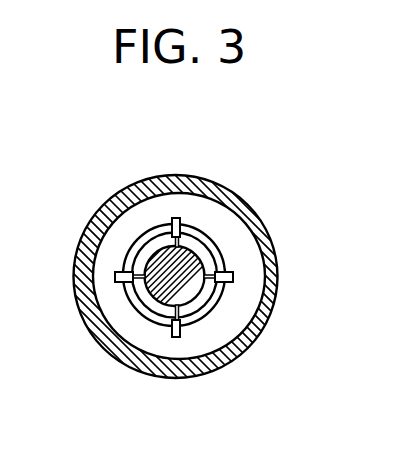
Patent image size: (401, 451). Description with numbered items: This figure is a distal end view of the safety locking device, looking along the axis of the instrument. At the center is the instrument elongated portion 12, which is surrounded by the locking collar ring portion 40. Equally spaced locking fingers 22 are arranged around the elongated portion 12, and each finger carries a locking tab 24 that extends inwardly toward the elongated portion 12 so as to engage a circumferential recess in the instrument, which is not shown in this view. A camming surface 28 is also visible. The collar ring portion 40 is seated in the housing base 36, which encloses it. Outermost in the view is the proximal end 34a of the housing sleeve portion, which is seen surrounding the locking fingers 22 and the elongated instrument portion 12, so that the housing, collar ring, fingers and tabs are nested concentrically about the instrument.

The proximal end of the housing sleeve portion 34a is at (195, 255).
The housing base 36 is at (180, 251).
The locking collar ring portion 40 is at (221, 255).
The locking tabs 24 is at (231, 270).
The locking fingers 22 is at (226, 299).
The camming surface 28 is at (109, 217).
The instrument elongated portion 12 is at (230, 257).